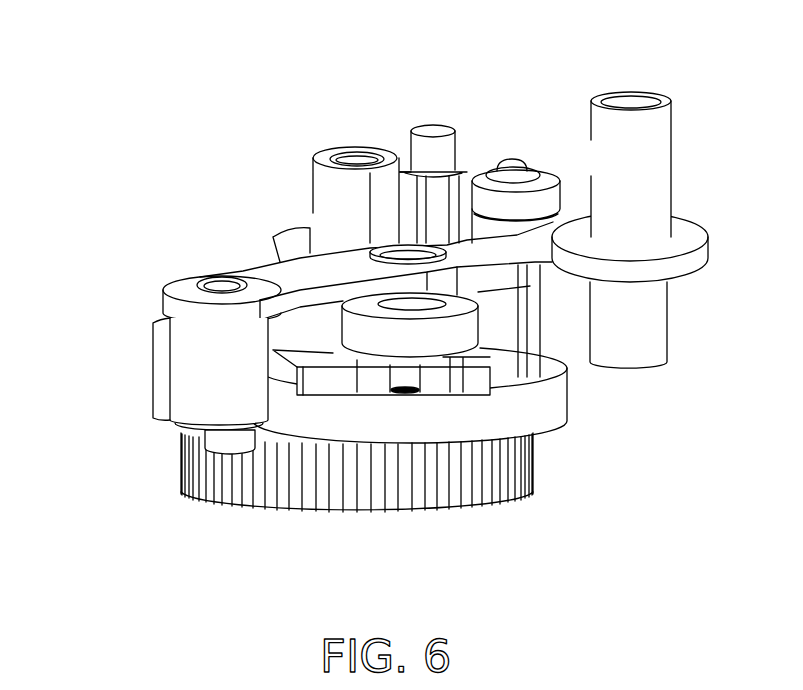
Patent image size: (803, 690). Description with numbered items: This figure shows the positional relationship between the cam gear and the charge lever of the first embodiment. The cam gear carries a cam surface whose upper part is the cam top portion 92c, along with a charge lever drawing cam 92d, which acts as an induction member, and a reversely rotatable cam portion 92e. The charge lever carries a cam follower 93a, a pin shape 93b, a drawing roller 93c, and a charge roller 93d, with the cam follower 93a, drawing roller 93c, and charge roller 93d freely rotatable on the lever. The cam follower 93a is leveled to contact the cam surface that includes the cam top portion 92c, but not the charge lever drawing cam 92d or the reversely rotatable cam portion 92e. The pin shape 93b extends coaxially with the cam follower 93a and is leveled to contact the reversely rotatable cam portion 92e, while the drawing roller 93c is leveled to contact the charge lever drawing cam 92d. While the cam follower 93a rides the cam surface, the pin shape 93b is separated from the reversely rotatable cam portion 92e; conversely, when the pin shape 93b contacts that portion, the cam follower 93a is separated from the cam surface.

The cam top portion 92c is at (563, 372).
The charge lever drawing cam 92d is at (467, 207).
The reversely rotatable cam portion 92e is at (330, 383).
The cam follower 93a is at (373, 333).
The pin shape 93b is at (410, 378).
The drawing roller 93c is at (527, 207).
The charge roller 93d is at (200, 360).